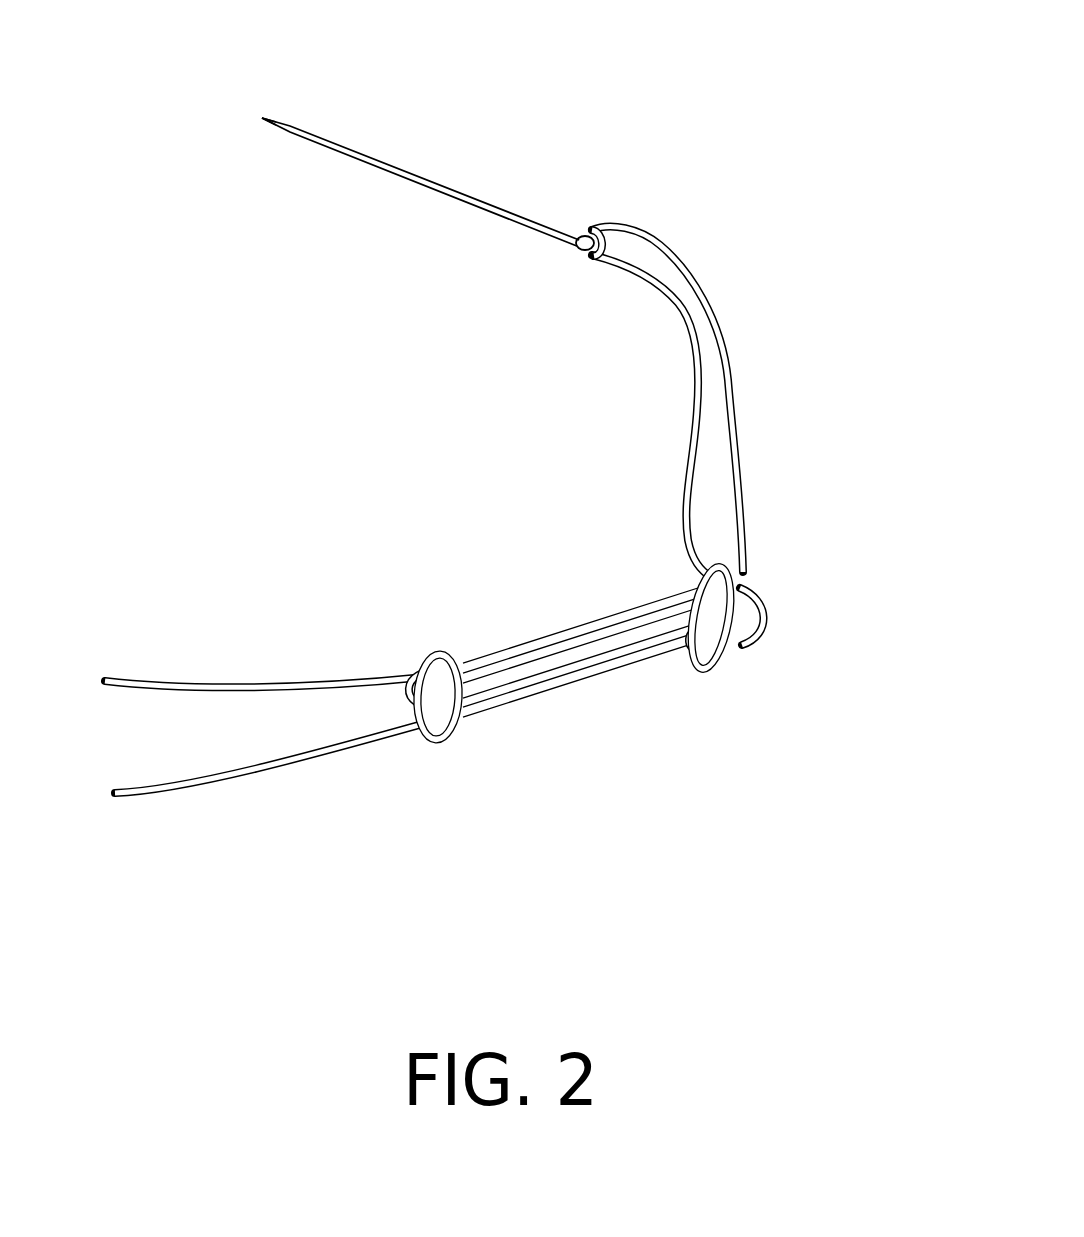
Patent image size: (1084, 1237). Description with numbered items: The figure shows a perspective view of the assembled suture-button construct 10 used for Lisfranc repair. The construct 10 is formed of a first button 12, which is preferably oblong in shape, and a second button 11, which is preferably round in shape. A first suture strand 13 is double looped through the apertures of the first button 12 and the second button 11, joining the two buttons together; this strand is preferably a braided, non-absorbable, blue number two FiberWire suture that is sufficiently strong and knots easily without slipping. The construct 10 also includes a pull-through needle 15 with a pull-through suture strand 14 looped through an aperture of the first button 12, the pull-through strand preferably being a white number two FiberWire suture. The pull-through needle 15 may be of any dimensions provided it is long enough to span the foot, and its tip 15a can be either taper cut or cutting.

The suture-button construct 10 is at (774, 201).
The second button 11 is at (455, 733).
The first button 12 is at (716, 670).
The first suture strand 13 is at (205, 678).
The pull-through suture strand 14 is at (731, 414).
The pull-through needle 15 is at (401, 168).
The tip 15a is at (262, 118).